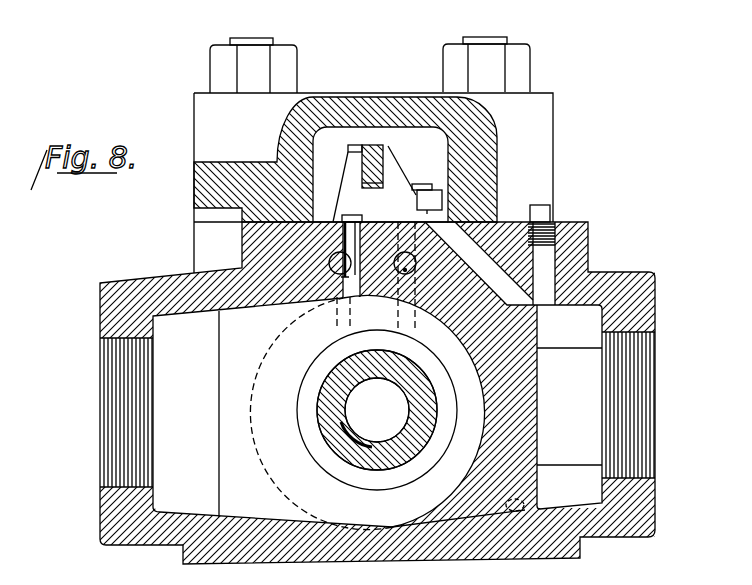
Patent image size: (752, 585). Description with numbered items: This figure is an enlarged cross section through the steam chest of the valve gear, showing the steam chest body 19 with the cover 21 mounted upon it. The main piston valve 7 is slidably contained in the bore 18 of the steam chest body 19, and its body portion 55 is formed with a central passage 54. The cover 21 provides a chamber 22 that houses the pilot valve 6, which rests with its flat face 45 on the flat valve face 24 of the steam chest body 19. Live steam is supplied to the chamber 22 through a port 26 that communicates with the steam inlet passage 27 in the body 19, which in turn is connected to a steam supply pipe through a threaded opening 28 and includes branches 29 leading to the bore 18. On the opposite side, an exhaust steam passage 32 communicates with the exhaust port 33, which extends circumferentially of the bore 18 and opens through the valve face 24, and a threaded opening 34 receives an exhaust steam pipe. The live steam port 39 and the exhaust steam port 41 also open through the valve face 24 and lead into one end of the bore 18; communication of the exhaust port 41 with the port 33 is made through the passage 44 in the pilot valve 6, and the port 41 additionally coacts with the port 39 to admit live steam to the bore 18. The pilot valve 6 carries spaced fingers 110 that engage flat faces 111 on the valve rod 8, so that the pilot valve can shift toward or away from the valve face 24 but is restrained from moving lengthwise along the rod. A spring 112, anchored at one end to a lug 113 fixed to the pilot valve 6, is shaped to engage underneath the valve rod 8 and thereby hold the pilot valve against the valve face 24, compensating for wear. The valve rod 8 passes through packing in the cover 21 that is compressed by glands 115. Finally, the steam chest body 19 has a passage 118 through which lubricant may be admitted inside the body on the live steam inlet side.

The pilot valve 6 is at (389, 144).
The main piston valve 7 is at (441, 433).
The valve rod 8 is at (370, 145).
The bore 18 is at (454, 419).
The steam chest body 19 is at (106, 528).
The cover 21 is at (404, 98).
The chamber 22 is at (326, 136).
The valve face 24 is at (412, 187).
The port 26 is at (482, 262).
The steam inlet passage 27 is at (587, 479).
The threaded opening 28 is at (644, 448).
The branches 29 is at (522, 500).
The exhaust steam passage 32 is at (173, 470).
The port 33 is at (355, 292).
The threaded opening 34 is at (113, 446).
The live steam port 39 is at (415, 323).
The exhaust steam port 41 is at (340, 322).
The passage 44 is at (352, 215).
The flat face 45 is at (366, 226).
The central passage 54 is at (402, 410).
The body portion 55 is at (428, 440).
The fingers 110 is at (388, 150).
The flat faces 111 is at (349, 160).
The spring 112 is at (408, 184).
The lug 113 is at (442, 197).
The glands 115 is at (553, 217).
The passage 118 is at (547, 262).